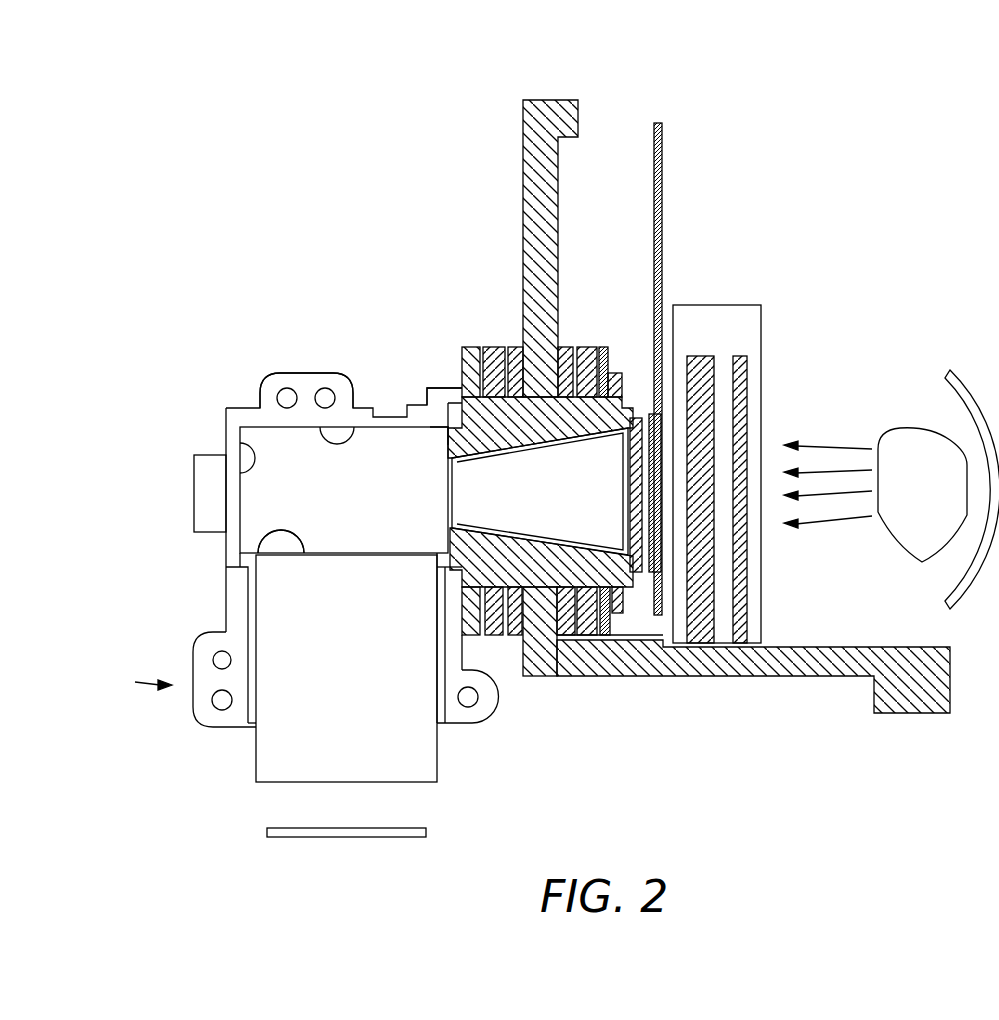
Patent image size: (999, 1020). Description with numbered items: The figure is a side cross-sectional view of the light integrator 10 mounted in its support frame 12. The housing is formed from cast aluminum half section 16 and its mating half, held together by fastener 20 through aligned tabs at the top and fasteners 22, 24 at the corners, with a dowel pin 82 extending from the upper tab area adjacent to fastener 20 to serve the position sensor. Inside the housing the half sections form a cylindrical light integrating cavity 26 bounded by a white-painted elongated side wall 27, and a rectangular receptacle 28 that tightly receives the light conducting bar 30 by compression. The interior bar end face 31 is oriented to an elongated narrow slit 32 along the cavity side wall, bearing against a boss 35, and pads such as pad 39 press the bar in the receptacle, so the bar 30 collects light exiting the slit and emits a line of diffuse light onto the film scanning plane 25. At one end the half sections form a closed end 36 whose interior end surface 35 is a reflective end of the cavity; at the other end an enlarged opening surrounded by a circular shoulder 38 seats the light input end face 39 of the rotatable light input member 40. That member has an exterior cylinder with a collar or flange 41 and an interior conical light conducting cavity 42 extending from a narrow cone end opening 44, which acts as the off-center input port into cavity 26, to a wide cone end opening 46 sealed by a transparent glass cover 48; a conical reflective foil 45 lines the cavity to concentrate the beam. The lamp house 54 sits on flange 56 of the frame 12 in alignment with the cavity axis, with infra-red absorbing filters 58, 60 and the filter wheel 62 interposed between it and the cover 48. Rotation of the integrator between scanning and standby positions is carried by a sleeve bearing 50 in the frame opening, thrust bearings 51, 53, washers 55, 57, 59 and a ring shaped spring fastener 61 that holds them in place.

The light integrator 10 is at (137, 681).
The support frame 12 is at (553, 100).
The housing half section 16 is at (226, 408).
The fastener 20 is at (325, 388).
The fastener 22 is at (222, 705).
The mounting bracket 24 is at (472, 700).
The film scanning plane 25 is at (353, 837).
The light integrating cylindrical cavity 26 is at (344, 490).
The cylindrical side wall 27 is at (353, 430).
The rectangular receptacle 28 is at (250, 727).
The light conducting bar 30 is at (420, 763).
The interior bar end face 31 is at (258, 547).
The slit 32 is at (228, 557).
The interior end surface 35 is at (240, 445).
The closed end 36 is at (210, 532).
The circular shoulder 38 is at (448, 397).
The light input end face 39 is at (448, 440).
The light input member 40 is at (580, 600).
The collar or flange 41 is at (467, 347).
The conical light conducting cavity 42 is at (540, 491).
The narrow cone end circular opening 44 is at (452, 492).
The conical shaped foil 45 is at (545, 445).
The wide cone end circular opening 46 is at (640, 575).
The transparent glass cover 48 is at (633, 488).
The sleeve bearing 50 is at (540, 593).
The thrust bearing 51 is at (488, 347).
The thrust bearing 53 is at (590, 347).
The lamp house 54 is at (902, 416).
The washer 55 is at (513, 347).
The flange 56 is at (784, 677).
The washer 57 is at (566, 347).
The infra-red light heat absorbing filter 58 is at (700, 356).
The washer 59 is at (603, 347).
The infra-red light heat absorbing filter 60 is at (740, 356).
The ring shaped spring fastener 61 is at (613, 373).
The filter wheel 62 is at (663, 170).
The dowel pin 82 is at (287, 388).